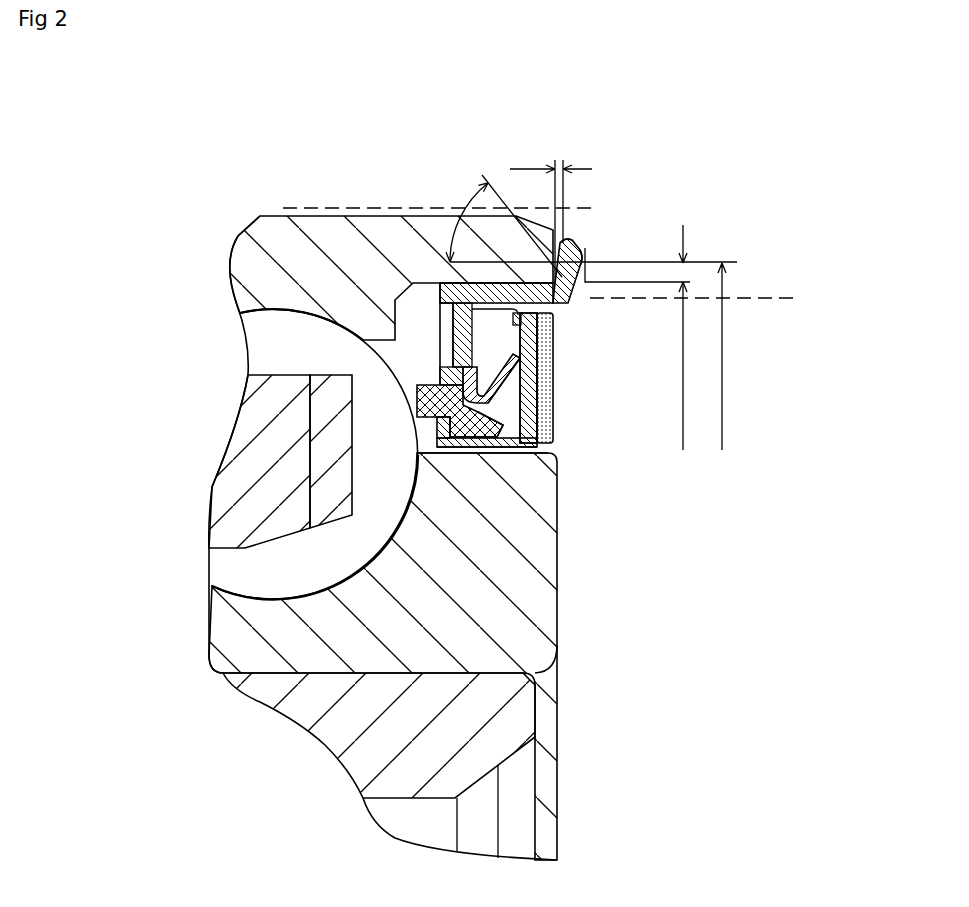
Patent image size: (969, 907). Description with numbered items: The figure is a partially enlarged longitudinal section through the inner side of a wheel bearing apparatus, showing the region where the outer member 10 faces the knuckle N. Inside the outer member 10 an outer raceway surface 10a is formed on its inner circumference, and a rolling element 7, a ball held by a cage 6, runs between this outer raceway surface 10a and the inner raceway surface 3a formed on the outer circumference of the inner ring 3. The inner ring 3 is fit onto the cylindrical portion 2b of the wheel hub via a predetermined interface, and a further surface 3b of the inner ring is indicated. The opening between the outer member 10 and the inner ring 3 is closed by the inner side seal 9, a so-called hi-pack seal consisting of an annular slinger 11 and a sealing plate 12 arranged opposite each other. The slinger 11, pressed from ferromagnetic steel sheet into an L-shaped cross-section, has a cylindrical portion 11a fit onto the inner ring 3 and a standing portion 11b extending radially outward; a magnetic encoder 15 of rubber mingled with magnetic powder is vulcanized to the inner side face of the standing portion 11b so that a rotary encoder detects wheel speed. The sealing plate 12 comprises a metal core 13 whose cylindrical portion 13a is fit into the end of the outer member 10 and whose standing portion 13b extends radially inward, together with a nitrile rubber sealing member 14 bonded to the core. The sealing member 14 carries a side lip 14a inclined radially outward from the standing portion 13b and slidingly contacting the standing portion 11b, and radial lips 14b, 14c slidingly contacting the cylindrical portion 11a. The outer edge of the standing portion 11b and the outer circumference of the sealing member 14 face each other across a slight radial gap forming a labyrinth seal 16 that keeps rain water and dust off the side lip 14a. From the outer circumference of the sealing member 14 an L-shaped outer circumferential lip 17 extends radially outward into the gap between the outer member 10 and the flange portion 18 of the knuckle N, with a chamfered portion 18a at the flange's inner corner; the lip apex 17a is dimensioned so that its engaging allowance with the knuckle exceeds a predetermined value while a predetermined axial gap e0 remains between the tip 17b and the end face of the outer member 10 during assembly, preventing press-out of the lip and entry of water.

The outer member 10 is at (276, 247).
The outer raceway surface 10a is at (257, 313).
The rolling element 7 is at (266, 582).
The cage 6 is at (248, 525).
The inner ring 3 is at (470, 620).
The inner raceway surface 3a is at (360, 570).
The seal fitting surface 3b is at (492, 453).
The cylindrical portion 2b is at (392, 670).
The sealing plate 12 is at (62, 370).
The metal core 13 is at (120, 343).
The cylindrical portion 13a is at (440, 287).
The standing portion 13b is at (465, 352).
The sealing member 14 is at (125, 437).
The side lip 14a is at (417, 385).
The radial lip 14b is at (430, 447).
The radial lip 14c is at (417, 414).
The magnetic encoder 15 is at (553, 372).
The labyrinth seal 16 is at (540, 306).
The outer circumferential lip 17 is at (582, 240).
The lip apex 17a is at (588, 255).
The tip 17b is at (574, 236).
The flange portion 18 is at (727, 247).
The chamfered portion 18a is at (577, 300).
The inner side seal 9 is at (516, 394).
The slinger 11 is at (722, 470).
The cylindrical portion 11a is at (493, 455).
The standing portion 11b is at (505, 426).
The knuckle N is at (427, 192).
The axial gap e0 is at (549, 212).